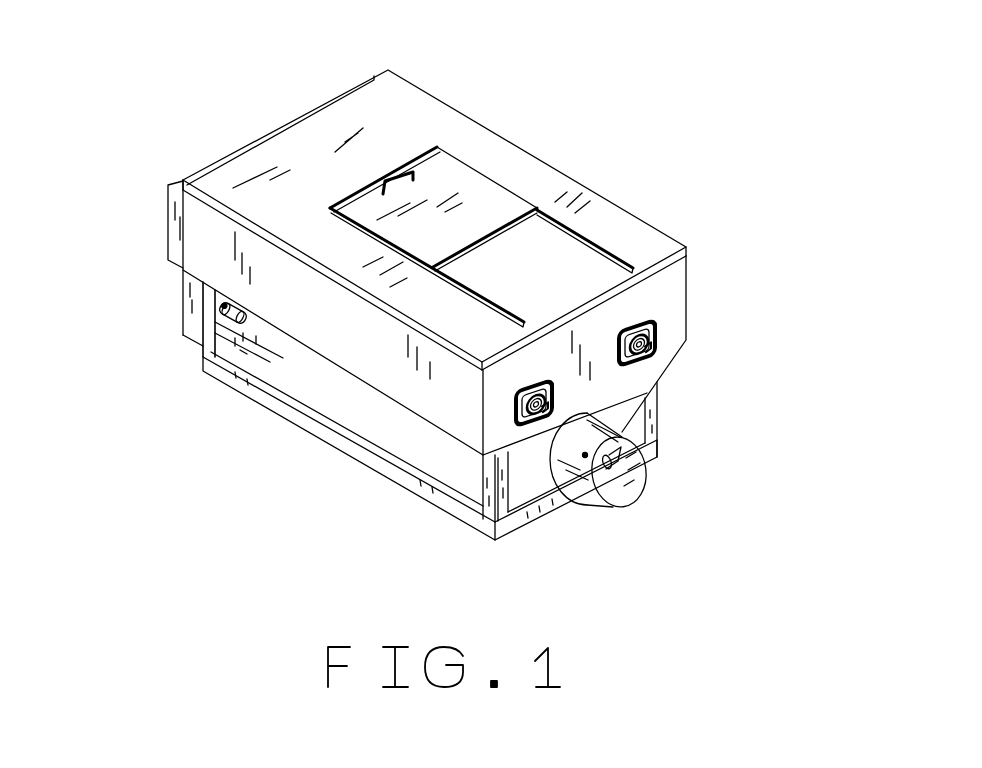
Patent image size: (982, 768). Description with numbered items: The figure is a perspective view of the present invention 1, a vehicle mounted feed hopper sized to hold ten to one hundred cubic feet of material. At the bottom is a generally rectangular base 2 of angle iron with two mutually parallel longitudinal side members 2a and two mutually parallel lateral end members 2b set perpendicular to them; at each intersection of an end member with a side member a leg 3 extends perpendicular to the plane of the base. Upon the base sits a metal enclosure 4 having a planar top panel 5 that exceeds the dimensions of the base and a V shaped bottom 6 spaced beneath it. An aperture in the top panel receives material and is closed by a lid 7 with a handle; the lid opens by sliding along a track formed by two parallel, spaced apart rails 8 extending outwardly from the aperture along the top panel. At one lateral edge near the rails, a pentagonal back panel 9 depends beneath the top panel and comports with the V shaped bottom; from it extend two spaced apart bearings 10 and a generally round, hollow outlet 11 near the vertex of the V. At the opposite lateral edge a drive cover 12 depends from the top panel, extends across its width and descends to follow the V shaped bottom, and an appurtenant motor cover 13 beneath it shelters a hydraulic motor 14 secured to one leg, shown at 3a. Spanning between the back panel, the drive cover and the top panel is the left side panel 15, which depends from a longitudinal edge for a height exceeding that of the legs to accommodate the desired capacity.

The present invention 1 is at (124, 139).
The base 2 is at (357, 469).
The longitudinal side members 2a is at (457, 522).
The lateral end members 2b is at (549, 520).
The leg 3 is at (500, 498).
The leg 3a is at (203, 347).
The metal enclosure 4 is at (484, 239).
The top panel 5 is at (340, 131).
The V shaped bottom 6 is at (356, 389).
The lid 7 is at (475, 201).
The rails 8 is at (580, 232).
The back panel 9 is at (653, 302).
The bearings 10 is at (654, 343).
The outlet 11 is at (623, 503).
The drive cover 12 is at (171, 184).
The motor cover 13 is at (190, 290).
The hydraulic motor 14 is at (215, 318).
The left side panel 15 is at (347, 331).